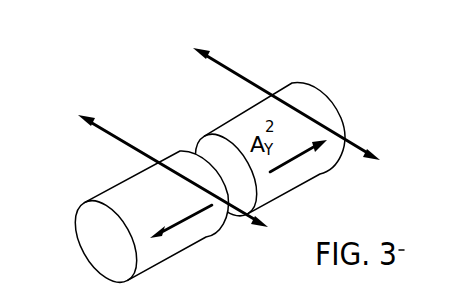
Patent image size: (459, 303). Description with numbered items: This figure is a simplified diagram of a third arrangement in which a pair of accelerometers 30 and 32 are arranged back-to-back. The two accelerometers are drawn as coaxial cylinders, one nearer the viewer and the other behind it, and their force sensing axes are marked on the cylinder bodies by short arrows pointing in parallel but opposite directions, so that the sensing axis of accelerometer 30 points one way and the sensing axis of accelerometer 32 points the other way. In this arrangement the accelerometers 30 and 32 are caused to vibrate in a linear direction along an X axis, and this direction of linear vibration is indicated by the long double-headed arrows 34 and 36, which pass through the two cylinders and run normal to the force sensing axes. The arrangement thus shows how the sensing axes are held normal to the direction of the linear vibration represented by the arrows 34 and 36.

The accelerometer 30 is at (75, 215).
The accelerometer 32 is at (331, 99).
The arrow 34 is at (122, 140).
The arrow 36 is at (220, 63).